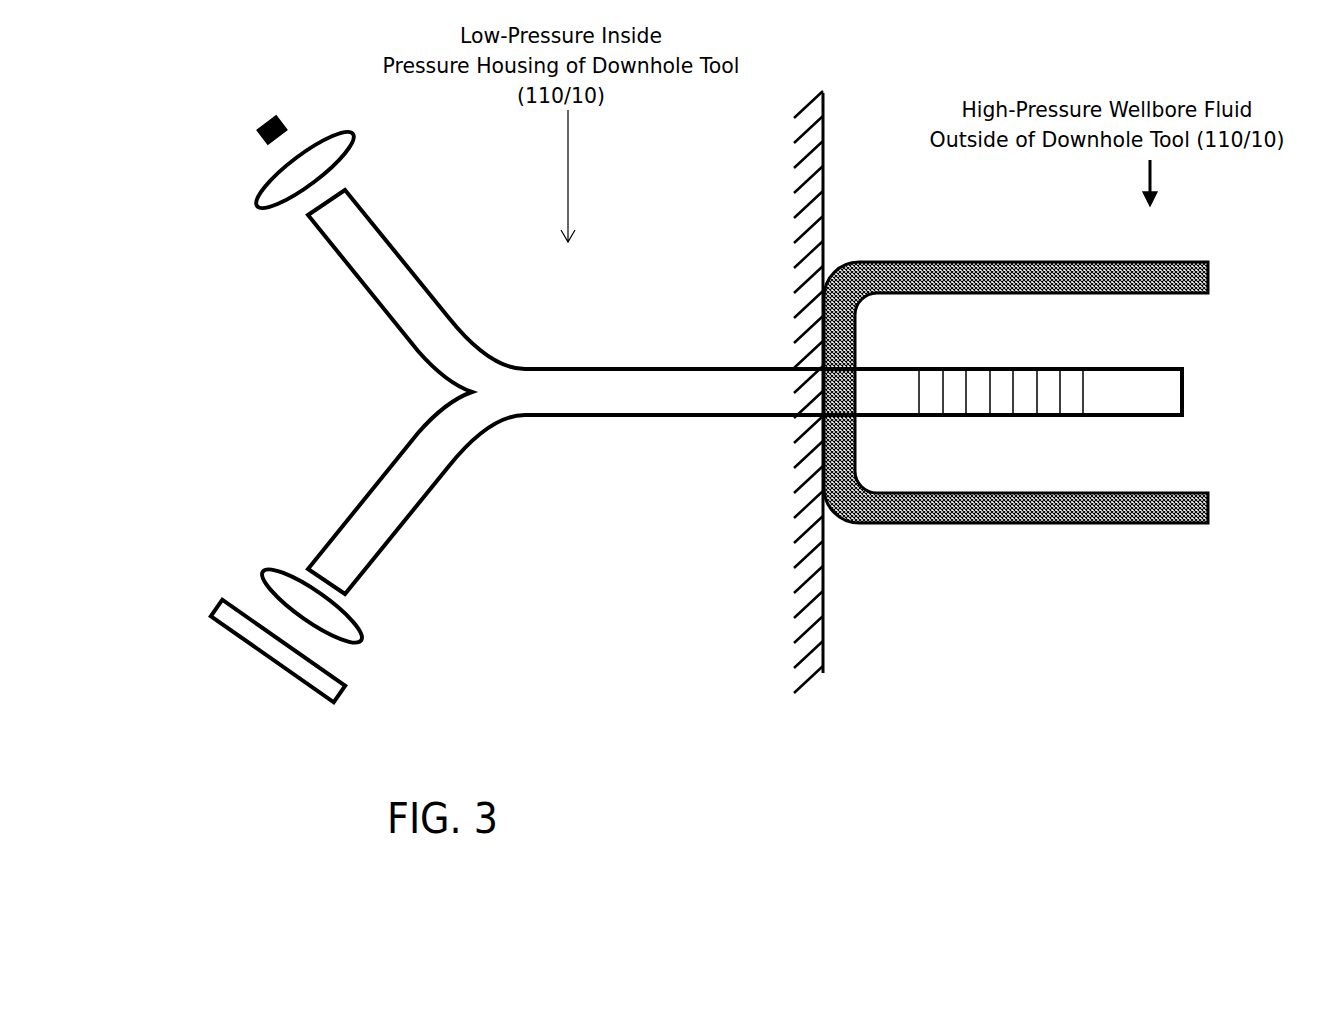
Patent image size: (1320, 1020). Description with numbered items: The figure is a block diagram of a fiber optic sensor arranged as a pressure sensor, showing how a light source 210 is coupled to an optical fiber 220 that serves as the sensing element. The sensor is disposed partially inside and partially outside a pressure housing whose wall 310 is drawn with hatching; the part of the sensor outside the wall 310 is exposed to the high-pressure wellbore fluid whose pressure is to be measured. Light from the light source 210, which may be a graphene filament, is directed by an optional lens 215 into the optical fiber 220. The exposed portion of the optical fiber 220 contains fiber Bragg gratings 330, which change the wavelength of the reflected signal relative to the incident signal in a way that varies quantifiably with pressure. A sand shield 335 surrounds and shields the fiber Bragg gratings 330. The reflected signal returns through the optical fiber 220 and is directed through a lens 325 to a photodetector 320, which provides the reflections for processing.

The light source 210 is at (246, 154).
The lens 215 is at (247, 219).
The optical fiber 220 is at (639, 354).
The wall 310 is at (838, 699).
The photodetector 320 is at (367, 687).
The lens 325 is at (256, 541).
The fiber Bragg gratings 330 is at (919, 424).
The sand shield 335 is at (1064, 533).